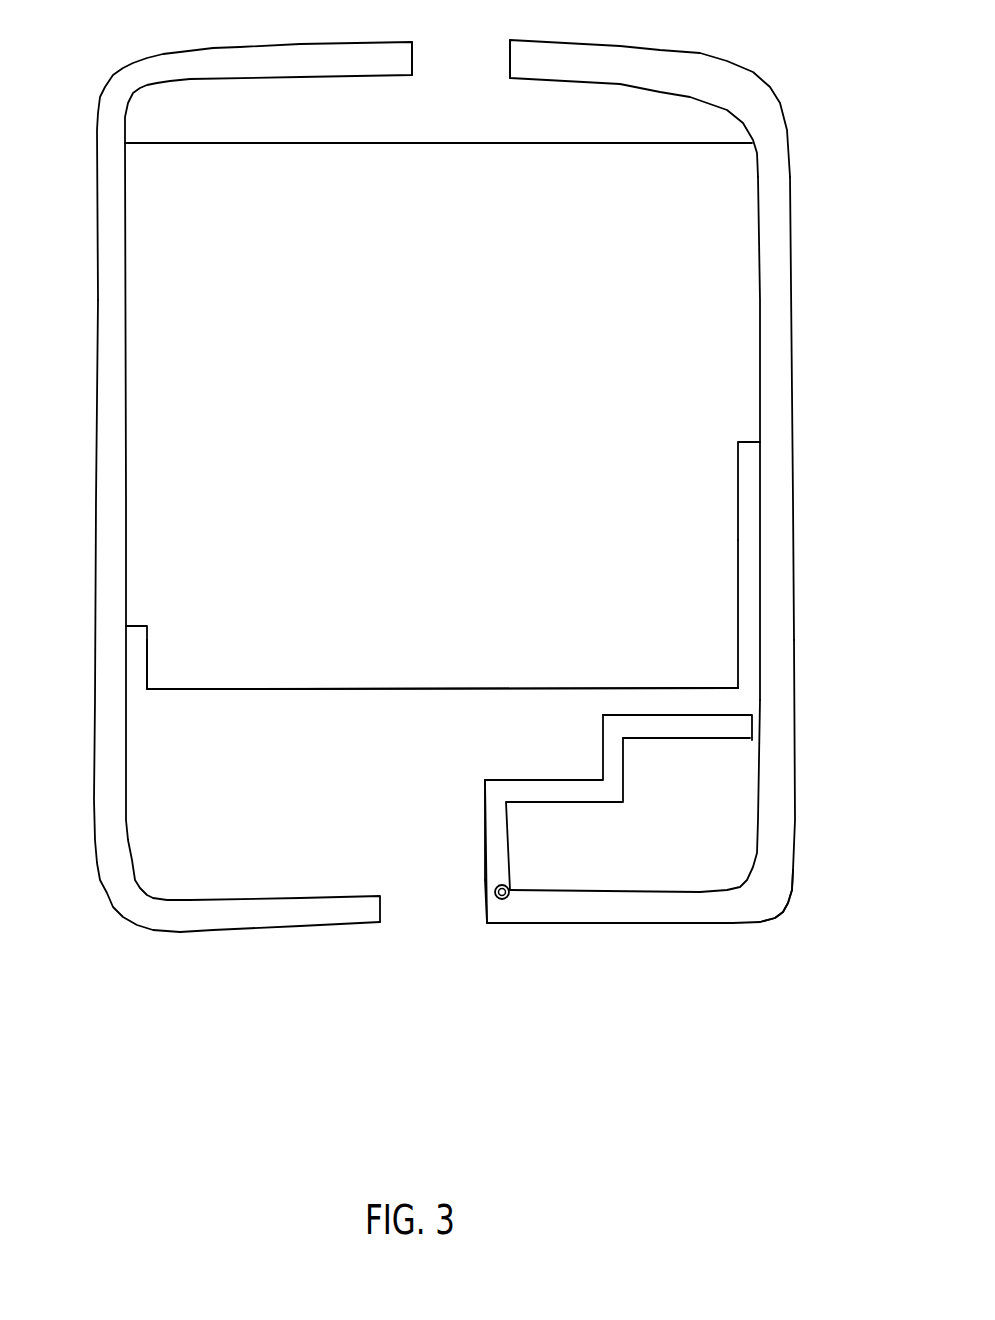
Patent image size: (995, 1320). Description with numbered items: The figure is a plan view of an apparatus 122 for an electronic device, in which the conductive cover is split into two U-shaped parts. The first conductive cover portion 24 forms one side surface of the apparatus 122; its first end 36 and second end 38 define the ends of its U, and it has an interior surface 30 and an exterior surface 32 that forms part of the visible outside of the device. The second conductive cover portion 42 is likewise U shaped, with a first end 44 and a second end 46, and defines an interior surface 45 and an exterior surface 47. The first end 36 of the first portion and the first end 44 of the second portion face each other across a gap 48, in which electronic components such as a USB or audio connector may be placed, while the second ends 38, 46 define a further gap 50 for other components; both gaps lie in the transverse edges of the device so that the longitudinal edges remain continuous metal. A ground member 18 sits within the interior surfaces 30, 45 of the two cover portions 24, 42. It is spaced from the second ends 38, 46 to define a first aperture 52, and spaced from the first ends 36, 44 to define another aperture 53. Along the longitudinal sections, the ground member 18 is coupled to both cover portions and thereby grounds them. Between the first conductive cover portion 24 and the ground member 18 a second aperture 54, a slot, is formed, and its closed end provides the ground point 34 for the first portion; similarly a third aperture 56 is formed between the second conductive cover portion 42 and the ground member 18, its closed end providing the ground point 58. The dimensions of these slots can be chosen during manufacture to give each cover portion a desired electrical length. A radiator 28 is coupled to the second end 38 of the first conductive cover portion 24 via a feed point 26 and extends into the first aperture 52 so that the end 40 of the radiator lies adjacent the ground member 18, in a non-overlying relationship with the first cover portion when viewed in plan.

The ground member 18 is at (446, 389).
The first conductive cover portion 24 is at (785, 568).
The feed point 26 is at (495, 900).
The radiator 28 is at (533, 793).
The interior surface 30 is at (757, 797).
The exterior surface 32 is at (797, 794).
The ground point 34 is at (750, 430).
The first end 36 is at (524, 62).
The second end 38 is at (513, 912).
The end of the radiator 40 is at (738, 740).
The second conductive cover portion 42 is at (162, 918).
The first end 44 is at (399, 62).
The interior surface 45 is at (128, 773).
The second end 46 is at (376, 920).
The exterior surface 47 is at (95, 848).
The gap 48 is at (492, 79).
The gap 50 is at (452, 891).
The first aperture 52 is at (436, 776).
The aperture 53 is at (364, 135).
The second aperture 54 is at (750, 488).
The third aperture 56 is at (135, 652).
The ground point 58 is at (139, 617).
The apparatus 122 is at (612, 1052).